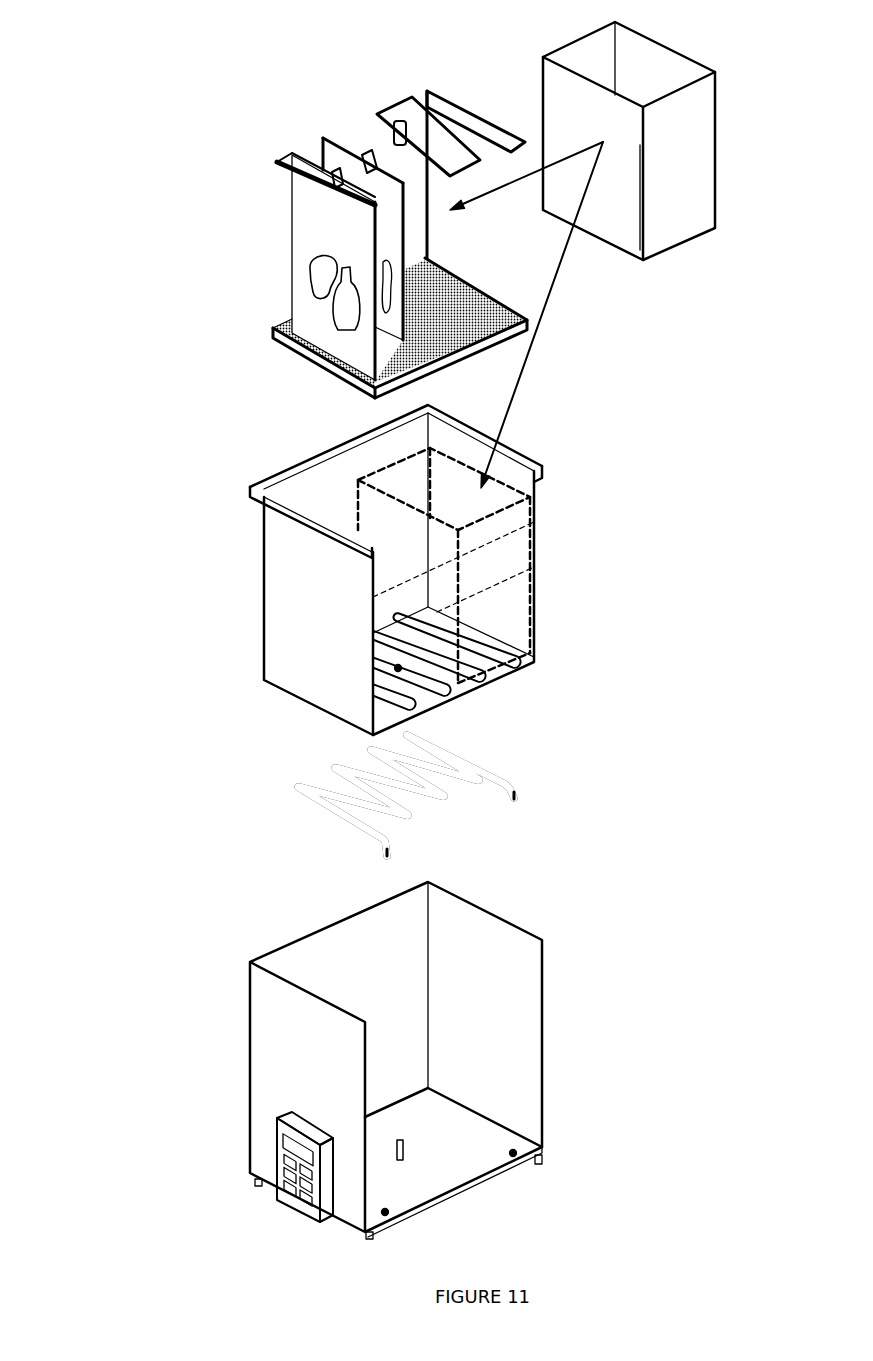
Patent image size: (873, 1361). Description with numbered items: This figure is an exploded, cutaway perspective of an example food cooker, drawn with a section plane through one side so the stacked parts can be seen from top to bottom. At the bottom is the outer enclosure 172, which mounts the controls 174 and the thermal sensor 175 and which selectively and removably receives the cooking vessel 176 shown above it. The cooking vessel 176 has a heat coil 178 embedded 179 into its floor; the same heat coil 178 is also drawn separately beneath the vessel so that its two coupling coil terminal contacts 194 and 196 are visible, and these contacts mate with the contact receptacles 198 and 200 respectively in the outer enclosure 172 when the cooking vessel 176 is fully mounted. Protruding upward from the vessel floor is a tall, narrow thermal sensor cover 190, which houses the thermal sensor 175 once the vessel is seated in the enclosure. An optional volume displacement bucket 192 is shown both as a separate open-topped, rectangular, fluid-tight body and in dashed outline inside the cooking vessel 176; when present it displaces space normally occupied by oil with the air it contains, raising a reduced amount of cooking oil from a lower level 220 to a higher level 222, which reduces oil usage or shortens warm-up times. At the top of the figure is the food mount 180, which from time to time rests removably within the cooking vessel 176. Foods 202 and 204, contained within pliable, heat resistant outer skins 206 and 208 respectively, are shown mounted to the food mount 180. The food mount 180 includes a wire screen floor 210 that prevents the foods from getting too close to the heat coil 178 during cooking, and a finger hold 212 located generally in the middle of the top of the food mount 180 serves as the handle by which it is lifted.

The outer enclosure 172 is at (302, 1062).
The controls 174 is at (300, 1175).
The thermal sensor 175 is at (407, 1153).
The cooking vessel 176 is at (510, 470).
The heat coil 178 is at (493, 762).
The embedded 179 is at (480, 650).
The food mount 180 is at (440, 100).
The thermal sensor cover 190 is at (397, 663).
The optional volume displacement bucket 192 is at (677, 210).
The coupling coil terminal contact 194 is at (385, 853).
The coupling coil terminal contact 196 is at (516, 795).
The contact receptacle 198 is at (390, 1213).
The contact receptacle 200 is at (517, 1150).
The food 202 is at (320, 273).
The food 204 is at (388, 303).
The pliable, heat resistant, outer skin 206 is at (317, 208).
The pliable, heat resistant, outer skin 208 is at (397, 243).
The wire screen floor 210 is at (318, 350).
The finger hold 212 is at (393, 132).
The lower level 220 is at (480, 598).
The higher level 222 is at (445, 563).